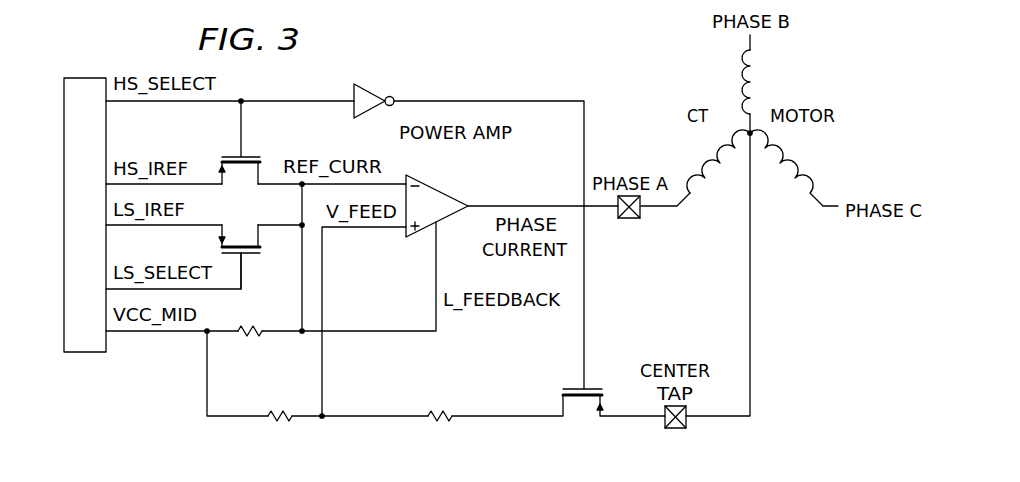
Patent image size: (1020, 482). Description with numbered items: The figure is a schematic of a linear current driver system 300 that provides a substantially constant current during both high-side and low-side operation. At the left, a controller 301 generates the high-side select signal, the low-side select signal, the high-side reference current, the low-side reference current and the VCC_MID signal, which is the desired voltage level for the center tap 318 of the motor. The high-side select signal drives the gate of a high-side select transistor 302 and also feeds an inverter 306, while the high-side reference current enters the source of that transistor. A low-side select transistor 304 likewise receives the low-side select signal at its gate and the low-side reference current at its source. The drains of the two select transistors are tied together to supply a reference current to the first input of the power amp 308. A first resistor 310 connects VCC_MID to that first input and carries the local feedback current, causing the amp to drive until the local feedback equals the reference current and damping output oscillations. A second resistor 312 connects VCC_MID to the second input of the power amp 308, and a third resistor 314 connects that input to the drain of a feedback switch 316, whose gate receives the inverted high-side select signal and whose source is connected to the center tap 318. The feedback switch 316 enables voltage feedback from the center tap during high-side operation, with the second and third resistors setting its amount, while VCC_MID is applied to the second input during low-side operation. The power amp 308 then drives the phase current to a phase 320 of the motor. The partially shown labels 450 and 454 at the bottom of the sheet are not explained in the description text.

The linear current driver system 300 is at (792, 330).
The controller 301 is at (83, 354).
The high-side select transistor 302 is at (225, 151).
The low-side select transistor 304 is at (251, 258).
The inverter 306 is at (369, 91).
The power amp 308 is at (438, 185).
The first resistor 310 is at (246, 337).
The second resistor 312 is at (277, 414).
The third resistor 314 is at (440, 414).
The feedback switch 316 is at (574, 388).
The center tap 318 is at (680, 431).
The phase 320 is at (630, 220).
The node 450 is at (272, 476).
The node 454 is at (535, 476).